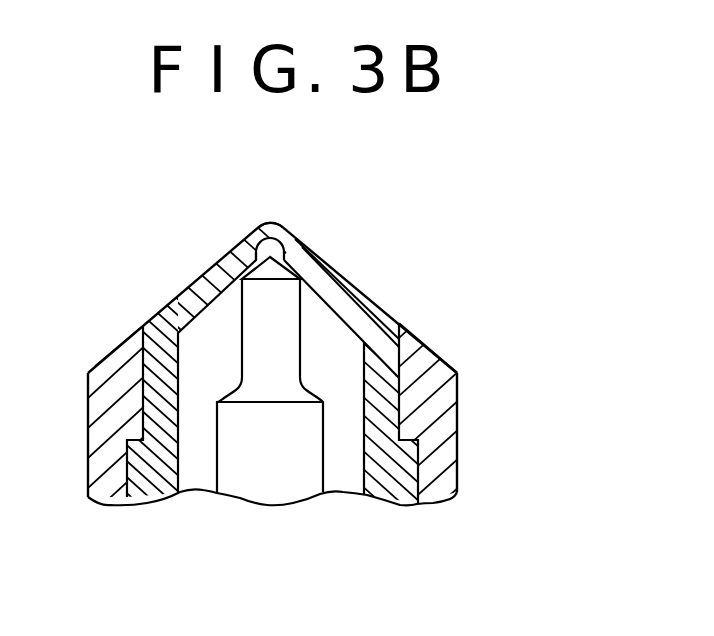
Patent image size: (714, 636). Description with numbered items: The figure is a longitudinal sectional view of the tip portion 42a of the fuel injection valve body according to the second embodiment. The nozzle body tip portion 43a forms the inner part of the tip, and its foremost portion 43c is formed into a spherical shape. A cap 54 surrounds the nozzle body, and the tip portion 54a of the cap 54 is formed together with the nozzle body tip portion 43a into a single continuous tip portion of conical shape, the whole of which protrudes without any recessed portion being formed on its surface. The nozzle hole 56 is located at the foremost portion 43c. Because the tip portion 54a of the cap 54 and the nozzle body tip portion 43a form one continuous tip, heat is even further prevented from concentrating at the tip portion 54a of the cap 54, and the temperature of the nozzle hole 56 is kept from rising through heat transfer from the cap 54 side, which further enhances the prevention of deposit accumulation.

The tip portion of the fuel injection valve body 42a is at (158, 245).
The nozzle body tip portion 43a is at (350, 280).
The foremost portion 43c is at (270, 221).
The cap 54 is at (440, 480).
The tip portion of the cap 54a is at (430, 350).
The nozzle hole 56 is at (277, 224).